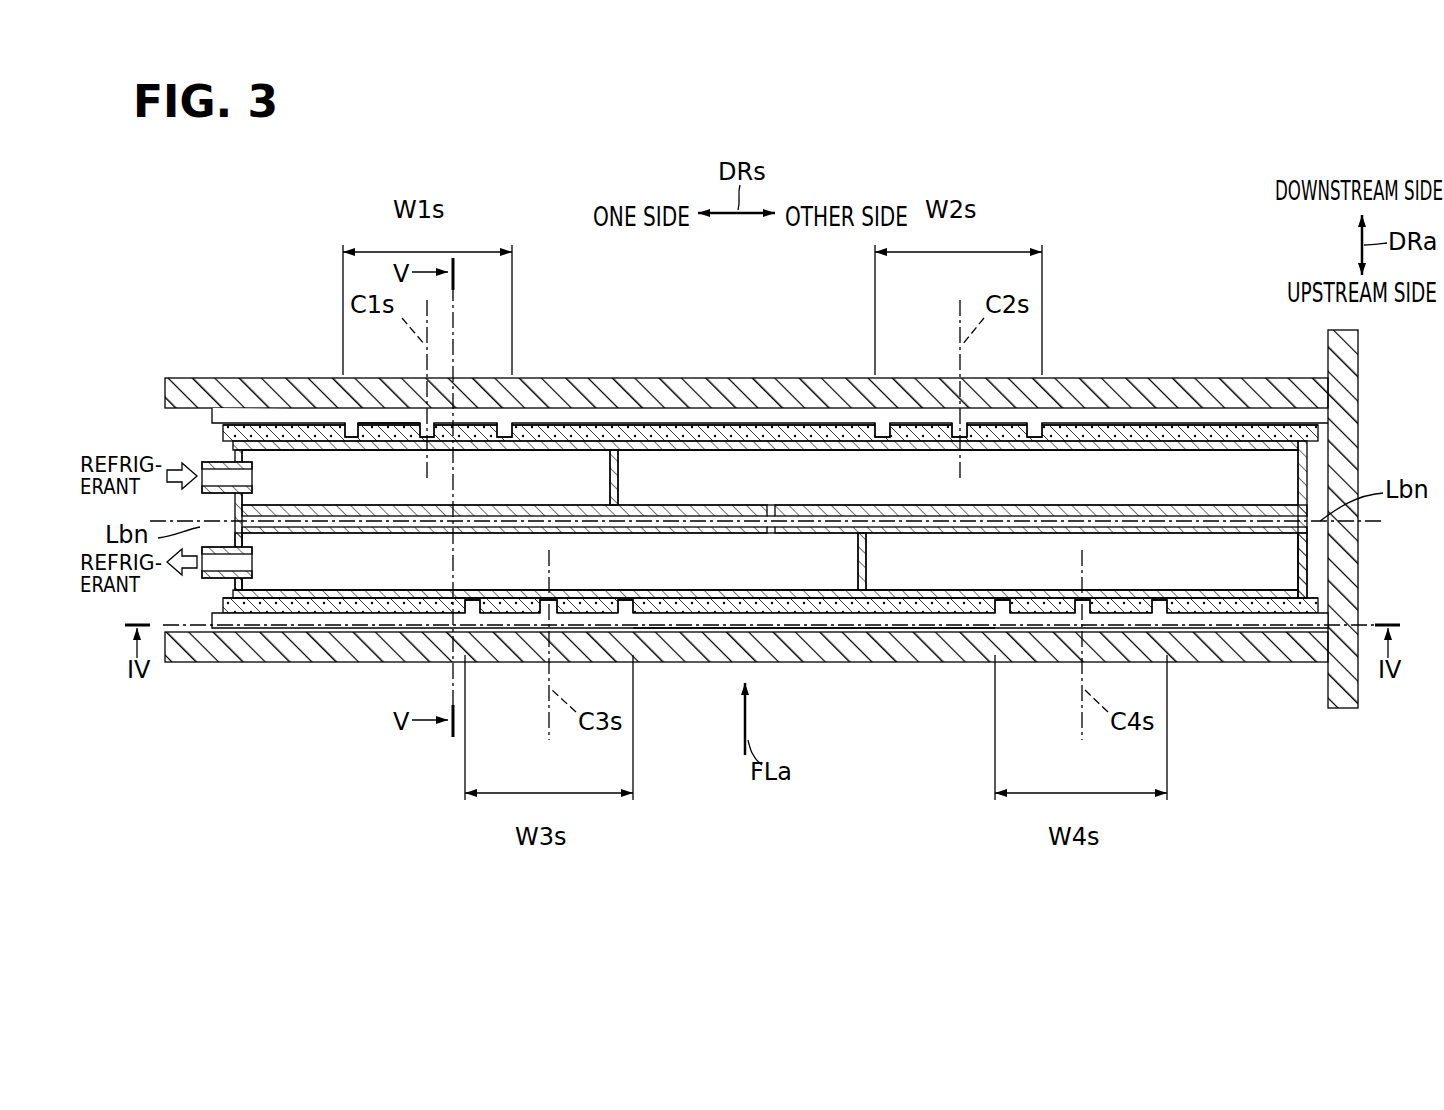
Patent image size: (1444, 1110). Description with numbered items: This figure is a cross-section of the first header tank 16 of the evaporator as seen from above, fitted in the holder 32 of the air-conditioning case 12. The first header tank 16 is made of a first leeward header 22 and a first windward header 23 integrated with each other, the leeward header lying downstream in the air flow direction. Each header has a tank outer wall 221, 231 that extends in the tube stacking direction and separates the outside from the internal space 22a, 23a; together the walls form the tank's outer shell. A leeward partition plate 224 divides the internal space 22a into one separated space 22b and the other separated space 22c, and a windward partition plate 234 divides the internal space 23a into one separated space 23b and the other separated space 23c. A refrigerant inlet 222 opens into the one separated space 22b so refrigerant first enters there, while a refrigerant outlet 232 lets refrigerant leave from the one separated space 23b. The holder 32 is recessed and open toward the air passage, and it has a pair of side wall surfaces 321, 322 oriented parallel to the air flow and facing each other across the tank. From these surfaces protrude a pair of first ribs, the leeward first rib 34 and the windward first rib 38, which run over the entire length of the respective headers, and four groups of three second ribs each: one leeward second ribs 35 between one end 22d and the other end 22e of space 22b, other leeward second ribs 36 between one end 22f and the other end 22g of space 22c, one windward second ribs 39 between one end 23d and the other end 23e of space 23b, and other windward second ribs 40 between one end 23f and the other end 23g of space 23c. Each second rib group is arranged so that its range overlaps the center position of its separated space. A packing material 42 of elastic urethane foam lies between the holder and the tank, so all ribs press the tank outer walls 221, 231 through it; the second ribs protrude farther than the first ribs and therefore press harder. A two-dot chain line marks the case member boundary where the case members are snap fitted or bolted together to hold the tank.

The air-conditioning case 12 is at (1362, 706).
The first header tank 16 is at (197, 460).
The first leeward header 22 is at (1284, 487).
The internal space 22a is at (1311, 472).
The one separated space 22b is at (280, 465).
The other separated space 22c is at (785, 478).
The one end 22d is at (233, 453).
The other end 22e is at (623, 455).
The one end 22f is at (610, 492).
The other end 22g is at (1312, 430).
The first windward header 23 is at (1284, 550).
The internal space 23a is at (1311, 573).
The one separated space 23b is at (348, 570).
The other separated space 23c is at (960, 565).
The one end 23d is at (233, 590).
The other end 23e is at (866, 555).
The one end 23f is at (855, 620).
The other end 23g is at (1312, 596).
The holder 32 is at (1186, 376).
The leeward first rib 34 is at (1222, 418).
The one leeward second rib 35 is at (343, 432).
The other leeward second rib 36 is at (880, 428).
The windward first rib 38 is at (927, 620).
The one windward second rib 39 is at (472, 630).
The other windward second rib 40 is at (1162, 625).
The packing material 42 is at (1250, 432).
The tank outer wall 221 is at (1123, 432).
The refrigerant inlet 222 is at (205, 493).
The leeward partition plate 224 is at (618, 475).
The tank outer wall 231 is at (1223, 600).
The refrigerant outlet 232 is at (205, 580).
The windward partition plate 234 is at (866, 575).
The side wall surface 321 is at (587, 410).
The side wall surface 322 is at (850, 623).